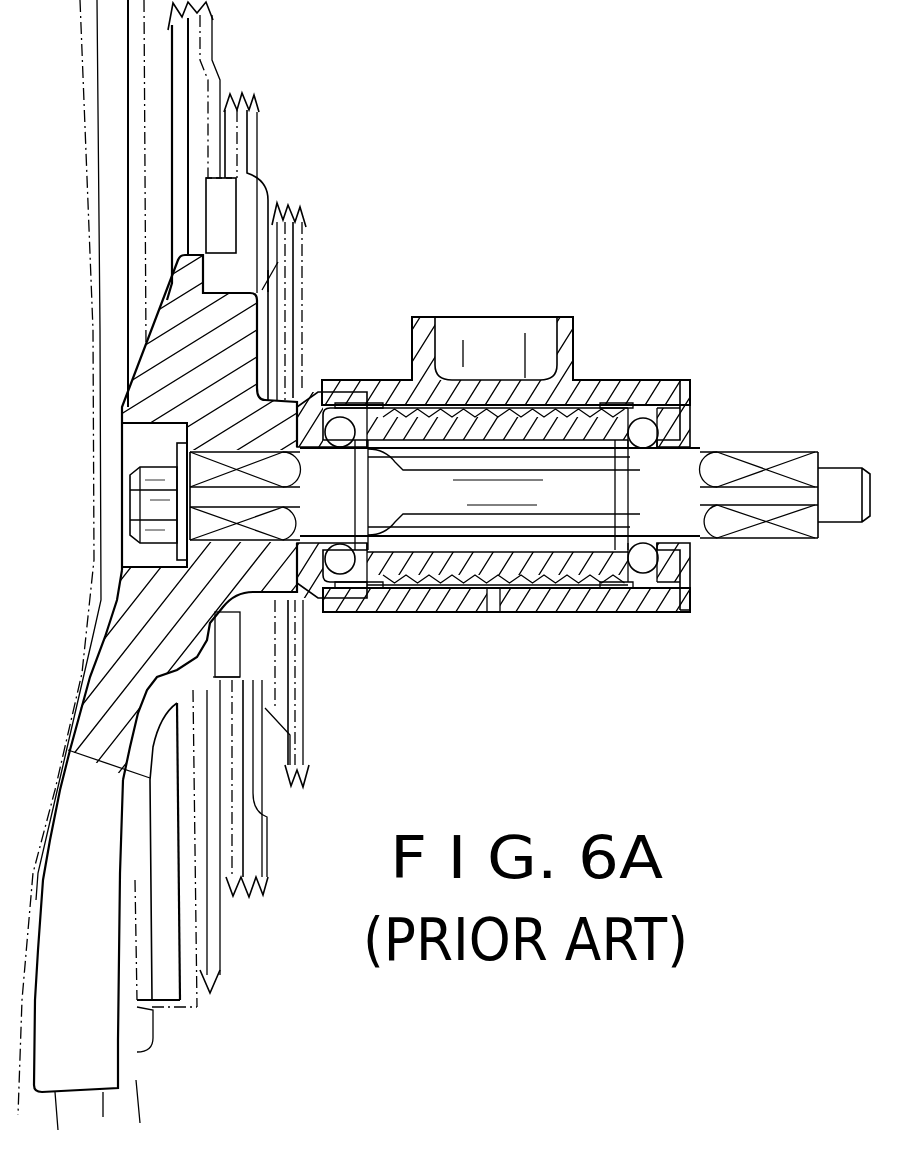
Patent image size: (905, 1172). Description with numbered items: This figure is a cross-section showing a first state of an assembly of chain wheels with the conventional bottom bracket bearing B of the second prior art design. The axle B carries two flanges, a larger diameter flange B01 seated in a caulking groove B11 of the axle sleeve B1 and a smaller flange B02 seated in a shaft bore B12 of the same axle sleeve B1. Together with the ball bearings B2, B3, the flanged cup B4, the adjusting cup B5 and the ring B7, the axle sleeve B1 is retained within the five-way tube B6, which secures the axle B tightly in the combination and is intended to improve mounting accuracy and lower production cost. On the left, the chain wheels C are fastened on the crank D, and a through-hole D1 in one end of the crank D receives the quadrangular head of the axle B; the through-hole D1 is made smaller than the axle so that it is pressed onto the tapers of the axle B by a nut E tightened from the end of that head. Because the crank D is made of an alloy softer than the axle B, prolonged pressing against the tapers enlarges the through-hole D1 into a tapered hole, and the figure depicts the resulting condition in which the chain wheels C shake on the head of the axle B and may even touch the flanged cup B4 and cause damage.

The chain wheels C is at (117, 151).
The crank D is at (122, 623).
The through-hole D1 is at (207, 445).
The nut E is at (143, 462).
The axle B is at (523, 522).
The larger diameter flange B01 is at (383, 517).
The smaller flange B02 is at (623, 507).
The axle sleeve B1 is at (587, 380).
The ball bearing B2 is at (344, 418).
The ball bearing B3 is at (625, 578).
The flanged cup B4 is at (313, 393).
The adjusting cup B5 is at (687, 573).
The five-way tube B6 is at (645, 380).
The ring B7 is at (687, 380).
The caulking groove B11 is at (367, 513).
The shaft bore B12 is at (558, 545).